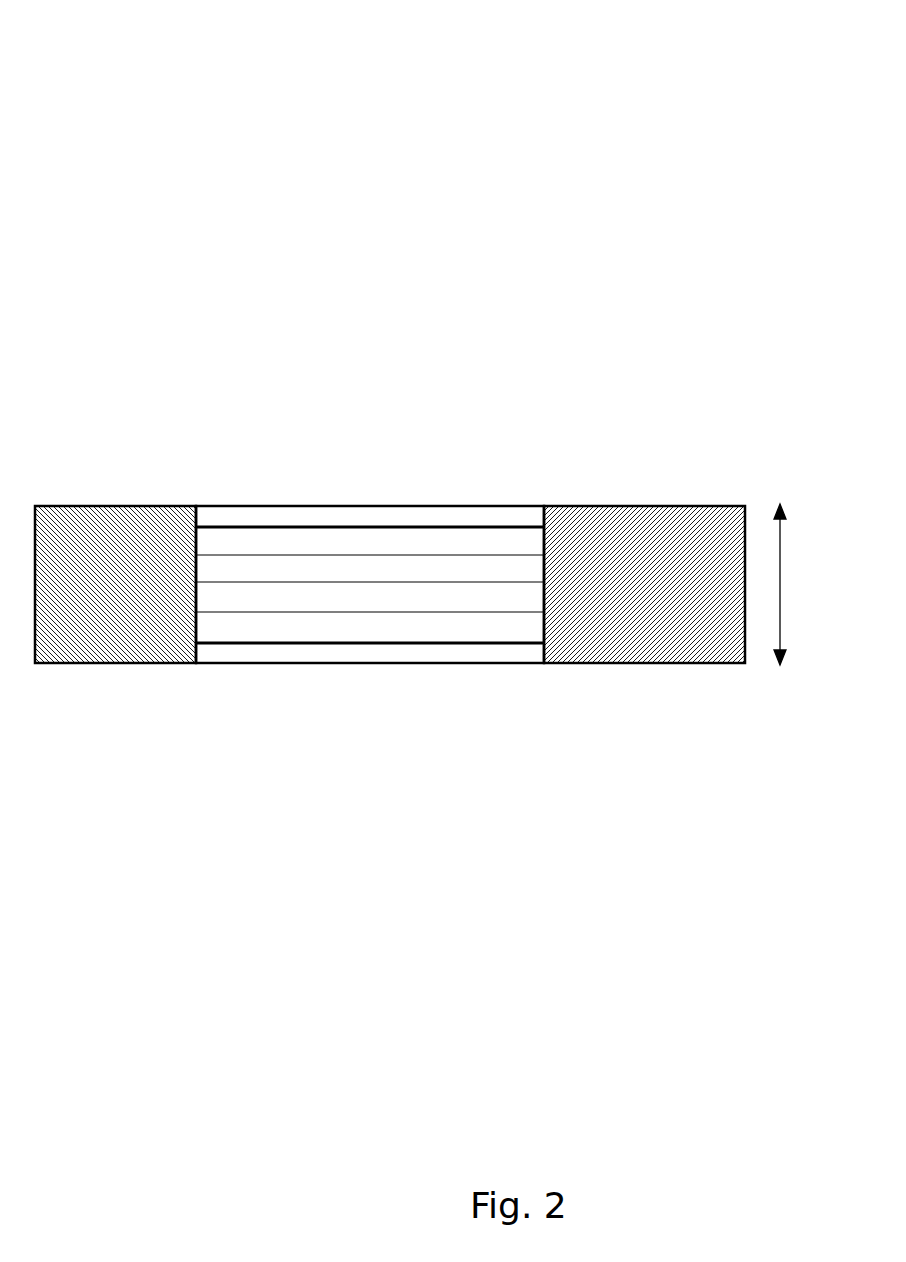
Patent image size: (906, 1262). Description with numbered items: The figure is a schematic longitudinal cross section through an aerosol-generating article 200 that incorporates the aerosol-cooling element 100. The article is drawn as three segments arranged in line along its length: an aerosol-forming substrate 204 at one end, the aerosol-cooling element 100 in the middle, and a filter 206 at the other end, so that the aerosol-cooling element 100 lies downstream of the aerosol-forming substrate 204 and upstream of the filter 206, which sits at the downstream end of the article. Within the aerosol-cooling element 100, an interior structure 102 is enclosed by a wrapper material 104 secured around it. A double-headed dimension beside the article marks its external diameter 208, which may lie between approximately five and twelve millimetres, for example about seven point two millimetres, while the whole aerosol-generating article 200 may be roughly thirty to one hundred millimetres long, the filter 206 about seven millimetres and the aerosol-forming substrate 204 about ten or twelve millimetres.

The aerosol-generating article 200 is at (633, 118).
The filter 206 is at (115, 507).
The aerosol-forming substrate 204 is at (622, 663).
The aerosol-cooling element 100 is at (197, 500).
The interior structure 102 is at (502, 507).
The wrapper material 104 is at (308, 652).
The external diameter 208 is at (780, 570).